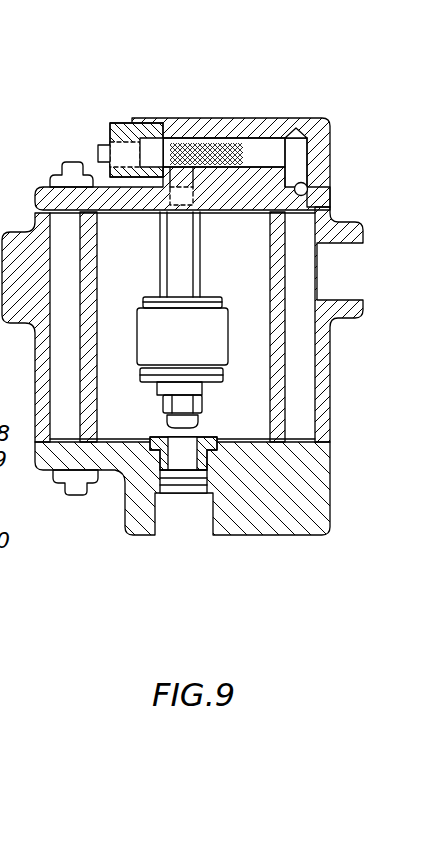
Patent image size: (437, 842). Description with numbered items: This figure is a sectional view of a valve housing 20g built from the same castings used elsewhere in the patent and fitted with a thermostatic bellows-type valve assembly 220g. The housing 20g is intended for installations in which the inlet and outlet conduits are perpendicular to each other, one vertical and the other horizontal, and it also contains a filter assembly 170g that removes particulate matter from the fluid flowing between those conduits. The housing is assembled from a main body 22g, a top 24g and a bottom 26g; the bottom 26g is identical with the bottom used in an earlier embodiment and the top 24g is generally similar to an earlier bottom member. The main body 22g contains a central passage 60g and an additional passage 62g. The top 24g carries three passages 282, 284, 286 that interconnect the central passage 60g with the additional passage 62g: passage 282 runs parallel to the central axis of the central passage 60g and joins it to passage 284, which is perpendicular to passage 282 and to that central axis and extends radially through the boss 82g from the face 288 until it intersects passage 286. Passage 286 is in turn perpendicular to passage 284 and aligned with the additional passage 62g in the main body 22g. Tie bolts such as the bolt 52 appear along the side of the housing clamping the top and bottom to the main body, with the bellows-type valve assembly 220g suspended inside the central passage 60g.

The valve housing 20g is at (218, 141).
The main body 22g is at (332, 405).
The top 24g is at (332, 120).
The bottom 26g is at (282, 537).
The tie bolt 52 is at (49, 328).
The central passage 60g is at (268, 388).
The additional passage 62g is at (318, 378).
The boss 82g is at (173, 118).
The filter assembly 170g is at (219, 122).
The bellows-type valve assembly 220g is at (240, 296).
The passage 282 is at (206, 197).
The passage 284 is at (270, 138).
The passage 286 is at (307, 194).
The face 288 is at (118, 123).